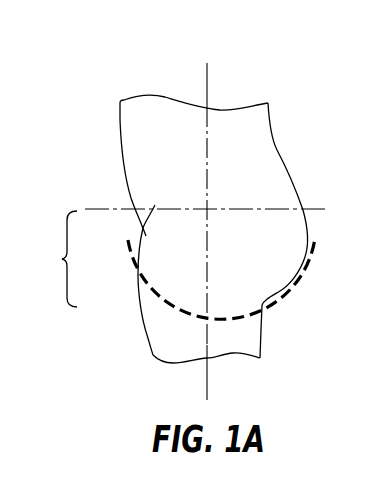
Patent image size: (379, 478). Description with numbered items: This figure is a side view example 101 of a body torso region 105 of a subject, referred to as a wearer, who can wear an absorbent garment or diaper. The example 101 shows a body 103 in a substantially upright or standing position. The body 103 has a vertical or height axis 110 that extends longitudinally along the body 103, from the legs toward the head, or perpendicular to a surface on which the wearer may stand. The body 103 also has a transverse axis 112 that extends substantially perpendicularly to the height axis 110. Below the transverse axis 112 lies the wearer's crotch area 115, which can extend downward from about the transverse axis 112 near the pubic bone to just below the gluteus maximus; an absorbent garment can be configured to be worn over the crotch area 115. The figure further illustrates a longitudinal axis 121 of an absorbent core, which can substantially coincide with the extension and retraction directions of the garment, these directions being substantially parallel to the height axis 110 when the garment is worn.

The side view example 101 is at (105, 64).
The body 103 is at (267, 153).
The body torso region 105 is at (108, 125).
The height axis 110 is at (209, 88).
The transverse axis 112 is at (105, 208).
The crotch area 115 is at (57, 259).
The longitudinal axis of an absorbent core 121 is at (285, 298).